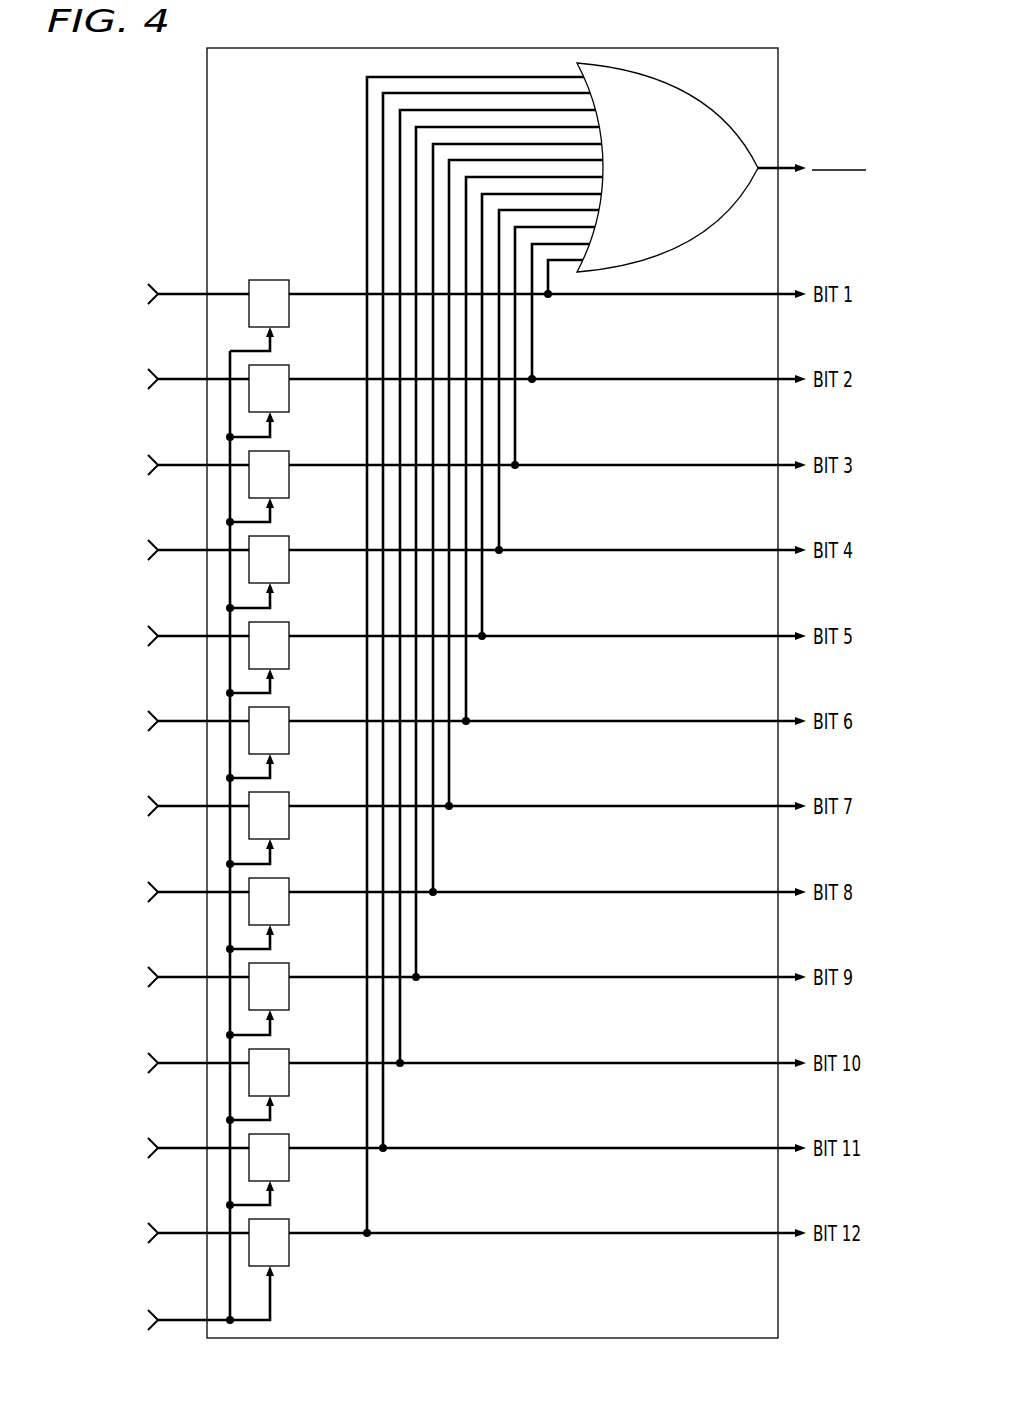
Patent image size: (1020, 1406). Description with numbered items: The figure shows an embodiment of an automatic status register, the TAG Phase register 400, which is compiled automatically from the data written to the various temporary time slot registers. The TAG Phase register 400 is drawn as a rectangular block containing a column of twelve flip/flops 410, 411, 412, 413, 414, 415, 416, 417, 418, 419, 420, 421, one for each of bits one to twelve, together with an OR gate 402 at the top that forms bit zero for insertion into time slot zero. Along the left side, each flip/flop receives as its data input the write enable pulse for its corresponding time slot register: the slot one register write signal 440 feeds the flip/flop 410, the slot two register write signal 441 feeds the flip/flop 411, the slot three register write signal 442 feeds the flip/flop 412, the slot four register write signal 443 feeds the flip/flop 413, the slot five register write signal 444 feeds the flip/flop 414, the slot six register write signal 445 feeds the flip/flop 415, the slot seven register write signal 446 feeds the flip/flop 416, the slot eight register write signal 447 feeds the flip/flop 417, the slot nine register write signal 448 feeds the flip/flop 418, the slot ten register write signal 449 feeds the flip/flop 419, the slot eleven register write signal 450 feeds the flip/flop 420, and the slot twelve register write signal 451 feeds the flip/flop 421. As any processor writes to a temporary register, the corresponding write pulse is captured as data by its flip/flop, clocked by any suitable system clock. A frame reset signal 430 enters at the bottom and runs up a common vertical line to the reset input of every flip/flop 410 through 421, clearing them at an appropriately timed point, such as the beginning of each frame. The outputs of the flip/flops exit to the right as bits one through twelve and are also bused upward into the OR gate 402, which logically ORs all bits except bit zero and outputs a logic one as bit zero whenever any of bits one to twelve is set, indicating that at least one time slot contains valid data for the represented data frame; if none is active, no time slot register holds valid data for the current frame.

The automatic status register 400 is at (778, 82).
The OR gate 402 is at (685, 245).
The flip/flop 410 is at (289, 321).
The flip/flop 411 is at (289, 406).
The flip/flop 412 is at (289, 492).
The flip/flop 413 is at (289, 577).
The flip/flop 414 is at (289, 663).
The flip/flop 415 is at (289, 748).
The flip/flop 416 is at (289, 833).
The flip/flop 417 is at (289, 919).
The flip/flop 418 is at (289, 1004).
The flip/flop 419 is at (289, 1090).
The flip/flop 420 is at (289, 1175).
The flip/flop 421 is at (289, 1260).
The frame reset signal 430 is at (183, 1316).
The slot 1 register write signal 440 is at (183, 290).
The slot 2 register write signal 441 is at (183, 375).
The slot 3 register write signal 442 is at (183, 461).
The slot 4 register write signal 443 is at (183, 546).
The slot 5 register write signal 444 is at (183, 632).
The slot 6 register write signal 445 is at (183, 717).
The slot 7 register write signal 446 is at (183, 802).
The slot 8 register write signal 447 is at (183, 888).
The slot 9 register write signal 448 is at (183, 973).
The slot 10 register write signal 449 is at (183, 1059).
The slot 11 register write signal 450 is at (183, 1144).
The slot 12 register write signal 451 is at (183, 1229).